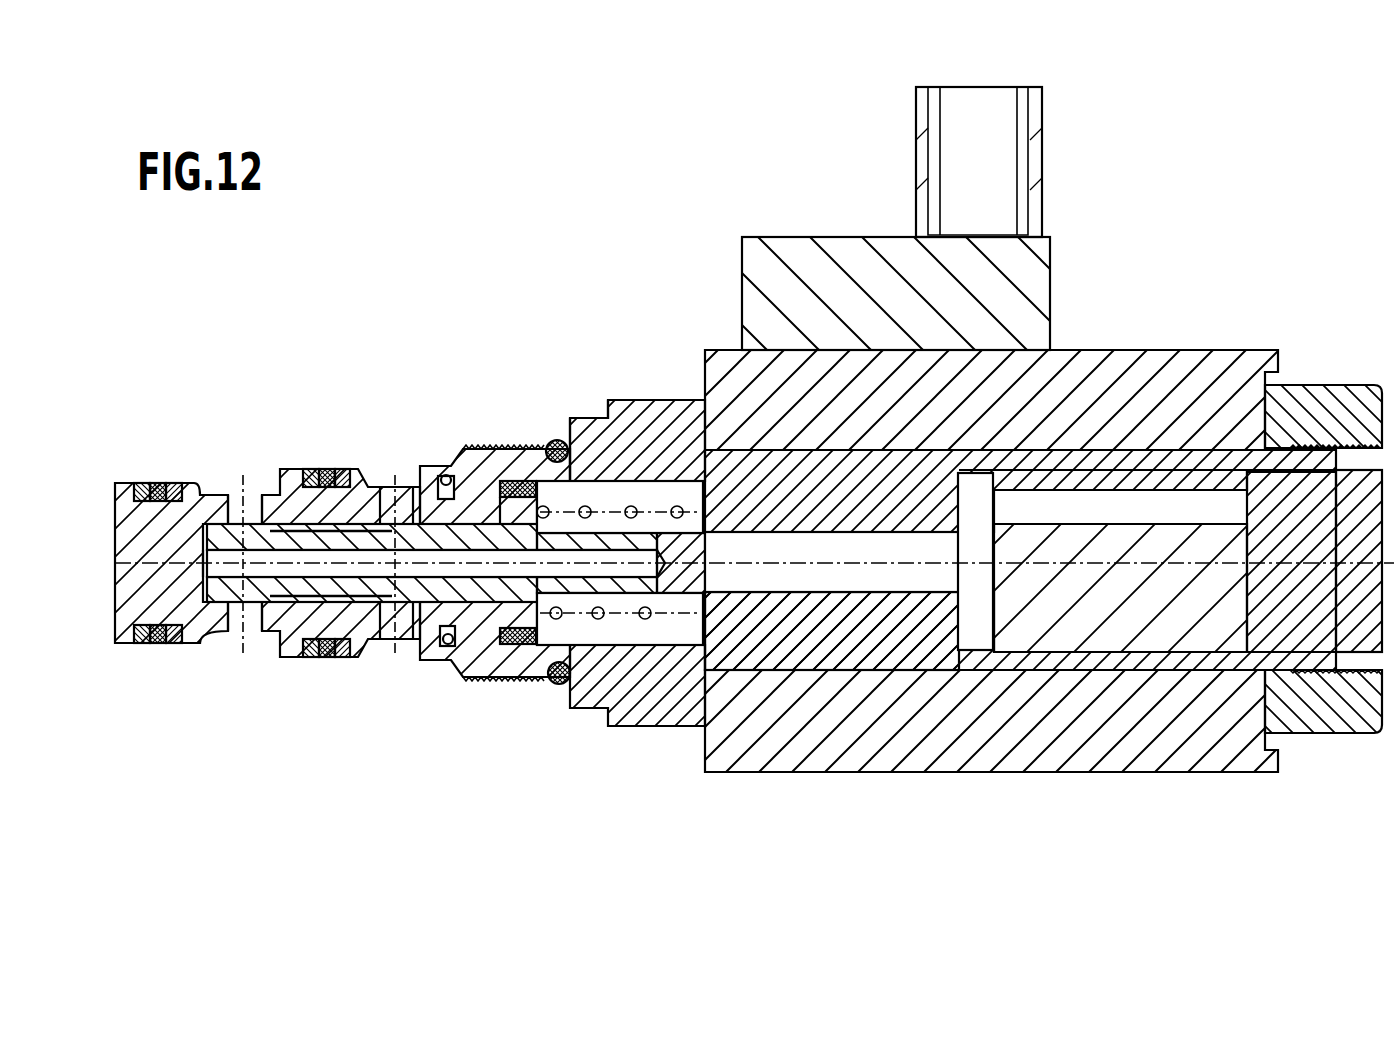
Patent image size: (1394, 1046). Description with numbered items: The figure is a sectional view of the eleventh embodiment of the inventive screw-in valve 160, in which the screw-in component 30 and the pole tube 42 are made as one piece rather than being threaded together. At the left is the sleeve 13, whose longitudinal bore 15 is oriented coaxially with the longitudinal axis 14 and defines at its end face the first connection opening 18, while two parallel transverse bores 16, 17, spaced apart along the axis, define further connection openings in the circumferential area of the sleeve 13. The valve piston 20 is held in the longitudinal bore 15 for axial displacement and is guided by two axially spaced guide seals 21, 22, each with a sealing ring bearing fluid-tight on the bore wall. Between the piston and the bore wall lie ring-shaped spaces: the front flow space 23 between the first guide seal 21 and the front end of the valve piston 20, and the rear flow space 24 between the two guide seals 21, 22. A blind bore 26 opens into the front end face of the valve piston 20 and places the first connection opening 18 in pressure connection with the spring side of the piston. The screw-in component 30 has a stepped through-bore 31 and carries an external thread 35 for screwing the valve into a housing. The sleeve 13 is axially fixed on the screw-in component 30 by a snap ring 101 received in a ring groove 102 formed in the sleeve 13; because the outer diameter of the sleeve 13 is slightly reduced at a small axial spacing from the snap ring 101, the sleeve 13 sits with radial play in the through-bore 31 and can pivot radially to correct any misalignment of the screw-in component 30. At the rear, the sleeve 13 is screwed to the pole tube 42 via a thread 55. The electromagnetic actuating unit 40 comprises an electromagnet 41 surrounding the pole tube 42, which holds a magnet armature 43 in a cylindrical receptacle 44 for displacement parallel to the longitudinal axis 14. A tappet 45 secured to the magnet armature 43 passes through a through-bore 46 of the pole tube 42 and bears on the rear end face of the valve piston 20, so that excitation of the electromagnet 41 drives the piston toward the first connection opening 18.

The sleeve 13 is at (352, 460).
The longitudinal axis 14 is at (130, 565).
The longitudinal bore 15 is at (130, 602).
The transverse bore 16 is at (233, 620).
The transverse bore 17 is at (385, 640).
The first connection opening 18 is at (118, 526).
The valve piston 20 is at (288, 600).
The first guide seal 21 is at (243, 490).
The second guide seal 22 is at (393, 481).
The front flow space 23 is at (230, 603).
The rear flow space 24 is at (405, 610).
The blind bore 26 is at (203, 552).
The screw-in component 30 is at (684, 392).
The through-bore 31 is at (472, 642).
The external thread 35 is at (468, 448).
The electromagnetic actuating unit 40 is at (1133, 345).
The electromagnet 41 is at (1243, 348).
The pole tube 42 is at (1043, 439).
The magnet armature 43 is at (1085, 622).
The cylindrical receptacle 44 is at (990, 640).
The tappet 45 is at (831, 575).
The through-bore 46 is at (880, 578).
The thread 55 is at (630, 460).
The snap ring 101 is at (442, 474).
The ring groove 102 is at (448, 648).
The screw-in valve 160 is at (1075, 212).